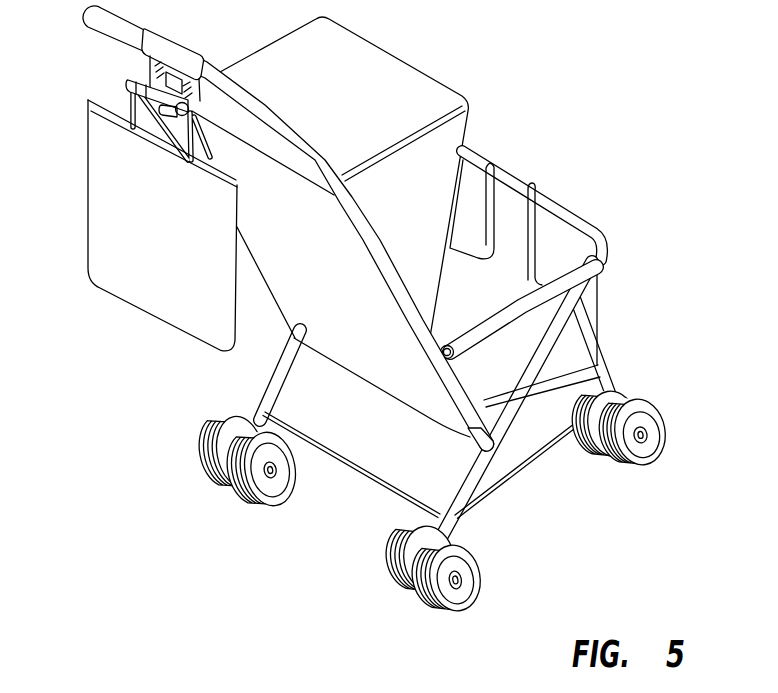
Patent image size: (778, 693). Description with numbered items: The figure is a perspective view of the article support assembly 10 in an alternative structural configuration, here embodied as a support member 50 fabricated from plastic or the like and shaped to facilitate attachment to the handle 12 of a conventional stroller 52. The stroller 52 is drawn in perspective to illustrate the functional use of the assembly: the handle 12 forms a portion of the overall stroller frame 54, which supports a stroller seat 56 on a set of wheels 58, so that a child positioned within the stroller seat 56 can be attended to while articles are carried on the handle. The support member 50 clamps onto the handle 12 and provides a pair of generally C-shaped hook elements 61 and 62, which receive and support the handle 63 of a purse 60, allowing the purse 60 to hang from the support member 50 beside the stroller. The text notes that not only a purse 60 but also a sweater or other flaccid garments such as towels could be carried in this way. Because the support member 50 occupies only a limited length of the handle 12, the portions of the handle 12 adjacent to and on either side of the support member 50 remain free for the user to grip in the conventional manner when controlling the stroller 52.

The article support assembly 10 is at (359, 312).
The handle 12 is at (288, 228).
The support member 50 is at (173, 57).
The stroller 52 is at (525, 348).
The stroller frame 54 is at (447, 431).
The stroller seat 56 is at (509, 217).
The wheels 58 is at (624, 439).
The purse 60 is at (137, 225).
The C-shaped hook element 61 is at (134, 84).
The C-shaped hook element 62 is at (193, 107).
The handle of the purse 63 is at (186, 144).